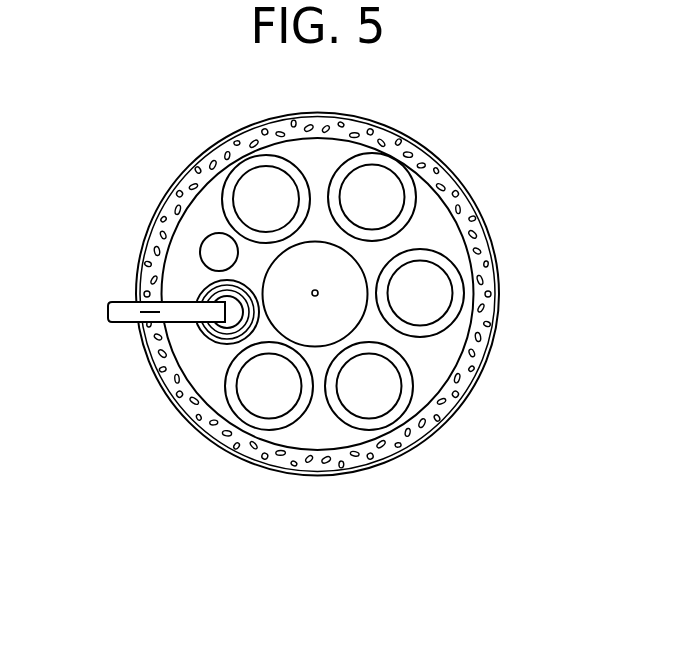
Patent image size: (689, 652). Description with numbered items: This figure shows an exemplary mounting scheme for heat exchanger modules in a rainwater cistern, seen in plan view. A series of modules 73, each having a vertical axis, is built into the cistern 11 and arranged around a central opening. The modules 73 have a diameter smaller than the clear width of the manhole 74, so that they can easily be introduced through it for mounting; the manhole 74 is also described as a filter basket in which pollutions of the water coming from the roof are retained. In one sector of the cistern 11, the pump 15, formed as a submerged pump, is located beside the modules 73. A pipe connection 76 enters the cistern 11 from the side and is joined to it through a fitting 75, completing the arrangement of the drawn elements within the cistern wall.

The cistern 11 is at (480, 347).
The pump 15 is at (225, 254).
The modules 73 is at (262, 194).
The manhole 74 is at (338, 272).
The fitting 75 is at (222, 336).
The tube / conduit 76 is at (130, 301).